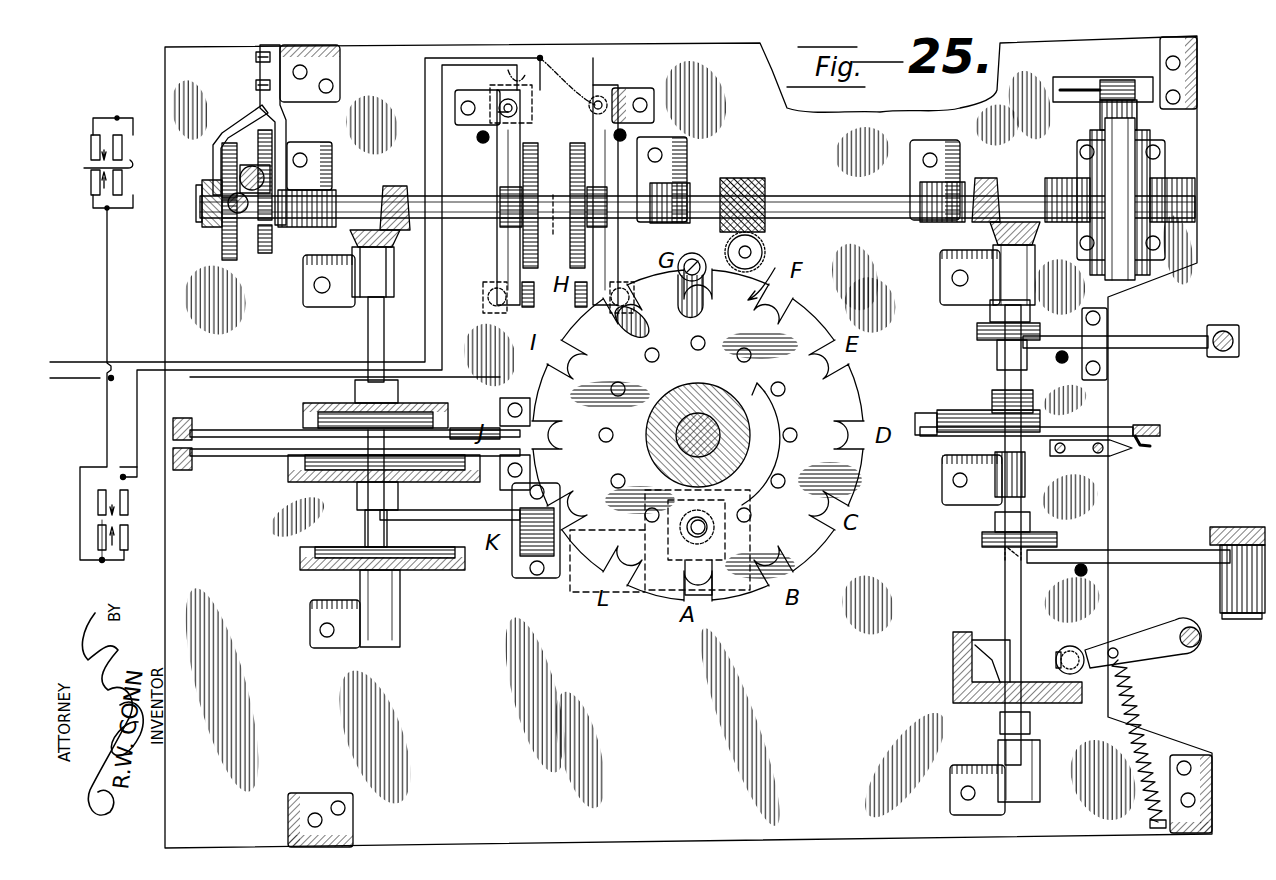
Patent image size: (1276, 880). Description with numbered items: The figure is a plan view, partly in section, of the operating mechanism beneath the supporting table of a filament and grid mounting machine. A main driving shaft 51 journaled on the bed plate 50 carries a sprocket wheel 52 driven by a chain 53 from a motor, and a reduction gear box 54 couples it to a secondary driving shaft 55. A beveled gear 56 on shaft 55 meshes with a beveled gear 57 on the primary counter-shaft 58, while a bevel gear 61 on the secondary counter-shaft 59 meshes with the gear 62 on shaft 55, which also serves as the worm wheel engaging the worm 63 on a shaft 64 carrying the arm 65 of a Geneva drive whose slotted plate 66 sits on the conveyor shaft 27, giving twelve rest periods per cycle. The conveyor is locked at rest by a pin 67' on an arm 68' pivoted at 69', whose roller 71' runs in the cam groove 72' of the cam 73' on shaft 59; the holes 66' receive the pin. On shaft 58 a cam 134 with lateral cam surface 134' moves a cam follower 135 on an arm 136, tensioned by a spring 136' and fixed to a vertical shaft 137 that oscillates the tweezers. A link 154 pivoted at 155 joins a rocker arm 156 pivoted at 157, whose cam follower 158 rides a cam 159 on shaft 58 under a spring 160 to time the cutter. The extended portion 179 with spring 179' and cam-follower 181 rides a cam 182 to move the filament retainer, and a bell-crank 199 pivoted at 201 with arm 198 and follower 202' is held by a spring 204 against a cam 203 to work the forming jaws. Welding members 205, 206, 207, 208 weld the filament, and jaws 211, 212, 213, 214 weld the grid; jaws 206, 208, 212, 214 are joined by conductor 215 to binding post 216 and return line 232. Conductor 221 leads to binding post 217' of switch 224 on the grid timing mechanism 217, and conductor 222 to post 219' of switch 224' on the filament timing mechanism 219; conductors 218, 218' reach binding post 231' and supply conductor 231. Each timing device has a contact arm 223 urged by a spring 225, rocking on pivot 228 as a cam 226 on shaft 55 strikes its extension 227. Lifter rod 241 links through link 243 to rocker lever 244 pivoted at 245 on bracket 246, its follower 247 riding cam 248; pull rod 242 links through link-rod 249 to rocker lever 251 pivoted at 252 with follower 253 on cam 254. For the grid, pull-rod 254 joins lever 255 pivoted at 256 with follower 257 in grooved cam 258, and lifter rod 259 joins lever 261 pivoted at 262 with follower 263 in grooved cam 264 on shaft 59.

The shaft of the conveyor 27 is at (690, 425).
The bed plate 50 is at (651, 754).
The main driving shaft 51 is at (1100, 116).
The sprocket wheel 52 is at (1130, 85).
The chain 53 is at (1078, 60).
The reduction gear box 54 is at (1155, 170).
The secondary driving shaft 55 is at (355, 200).
The beveled gear 56 is at (985, 180).
The beveled gear 57 is at (1040, 232).
The primary counter-shaft 58 is at (1005, 372).
The secondary counter-shaft 59 is at (368, 318).
The bevel gear 61 is at (350, 236).
The bevel gear / worm wheel 62 is at (396, 186).
The worm 63 is at (762, 246).
The shaft 64 is at (703, 285).
The arm of a Geneva drive 65 is at (705, 246).
The slotted plate 66 is at (698, 435).
The holes 66' is at (688, 435).
The pin 67' is at (711, 542).
The arm 68' is at (512, 557).
The pivot 69' is at (518, 538).
The roller 71' is at (362, 528).
The cam groove 72' is at (387, 609).
The cam 73' is at (365, 572).
The cam 134 is at (991, 667).
The lateral cam surface 134' is at (977, 639).
The cam follower 135 is at (1062, 650).
The arm 136 is at (1143, 631).
The spring 136' is at (1153, 744).
The vertical shaft 137 is at (1200, 637).
The link 154 is at (1210, 352).
The pivot 155 is at (1230, 352).
The rocker arm 156 is at (1114, 348).
The pivot 157 is at (1107, 326).
The cam follower 158 is at (997, 340).
The cam 159 is at (977, 333).
The spring 160 is at (1062, 363).
The extended portion 179 is at (1040, 416).
The spring 179' is at (1131, 451).
The cam-follower 181 is at (915, 422).
The cam 182 is at (975, 412).
The arm of bell-crank 198 is at (1232, 527).
The bell-crank 199 is at (1180, 550).
The pivot 201 is at (1222, 612).
The pin 202' is at (989, 558).
The cam 203 is at (982, 540).
The spring 204 is at (1090, 572).
The welding member 205 is at (122, 140).
The welding member 206 is at (84, 170).
The welding member 207 is at (90, 143).
The welding member 208 is at (90, 185).
The grid welding jaw 211 is at (128, 498).
The grid welding jaw 212 is at (130, 535).
The grid welding jaw 213 is at (100, 490).
The grid welding jaw 214 is at (98, 540).
The conductor 215 is at (107, 290).
The binding post 216 is at (111, 380).
The grid welding timing mechanism 217 is at (484, 197).
The upper binding post 217' is at (530, 124).
The conductor 218 is at (536, 91).
The conductor 218' is at (570, 81).
The filament welding timing mechanism 219 is at (631, 195).
The upper binding post 219' is at (649, 105).
The conductor 221 is at (455, 110).
The conductor 222 is at (422, 60).
The insulated contact arm 223 is at (500, 182).
The make and break switch 224 is at (495, 96).
The make and break switch 224' is at (580, 116).
The spring 225 is at (483, 144).
The cam 226 is at (532, 178).
The extension 227 is at (553, 232).
The pivot 228 is at (534, 305).
The conductor 231 is at (296, 209).
The binding post 231' is at (566, 67).
The return or negative line 232 is at (90, 380).
The lifter rod 241 is at (240, 200).
The pull rod 242 is at (250, 165).
The link 243 is at (205, 228).
The rocker lever 244 is at (216, 134).
The pivot 245 is at (256, 57).
The stationary bracket 246 is at (335, 58).
The cam follower 247 is at (228, 254).
The cam 248 is at (222, 248).
The link-rod 249 is at (300, 165).
The rocker lever 251 is at (282, 112).
The pivot 252 is at (256, 85).
The cam follower 253 is at (268, 222).
The cam / pull-rod 254 is at (265, 254).
The lever 255 is at (278, 428).
The pivot 256 is at (508, 398).
The cam follower 257 is at (370, 400).
The grooved cam 258 is at (438, 405).
The lifter rod 259 is at (183, 470).
The lever 261 is at (260, 456).
The pivot 262 is at (505, 470).
The cam follower 263 is at (357, 490).
The grooved cam 264 is at (295, 478).